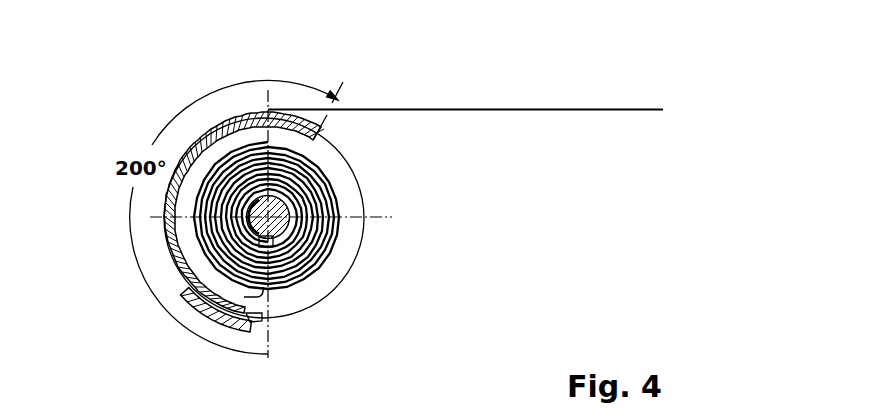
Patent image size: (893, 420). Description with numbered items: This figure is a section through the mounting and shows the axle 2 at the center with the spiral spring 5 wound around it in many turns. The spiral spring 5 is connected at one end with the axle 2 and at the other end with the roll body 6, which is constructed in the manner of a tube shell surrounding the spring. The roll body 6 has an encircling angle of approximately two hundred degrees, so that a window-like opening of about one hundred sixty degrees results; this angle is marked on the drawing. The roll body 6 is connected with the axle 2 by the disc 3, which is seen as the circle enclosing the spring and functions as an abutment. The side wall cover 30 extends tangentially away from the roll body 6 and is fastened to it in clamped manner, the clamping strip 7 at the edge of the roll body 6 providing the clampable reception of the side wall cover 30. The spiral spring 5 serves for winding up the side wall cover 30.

The axle 2 is at (288, 206).
The disc 3 is at (340, 161).
The spiral spring 5 is at (333, 247).
The roll body 6 is at (243, 115).
The clamping strip 7 is at (187, 310).
The side wall cover 30 is at (510, 109).